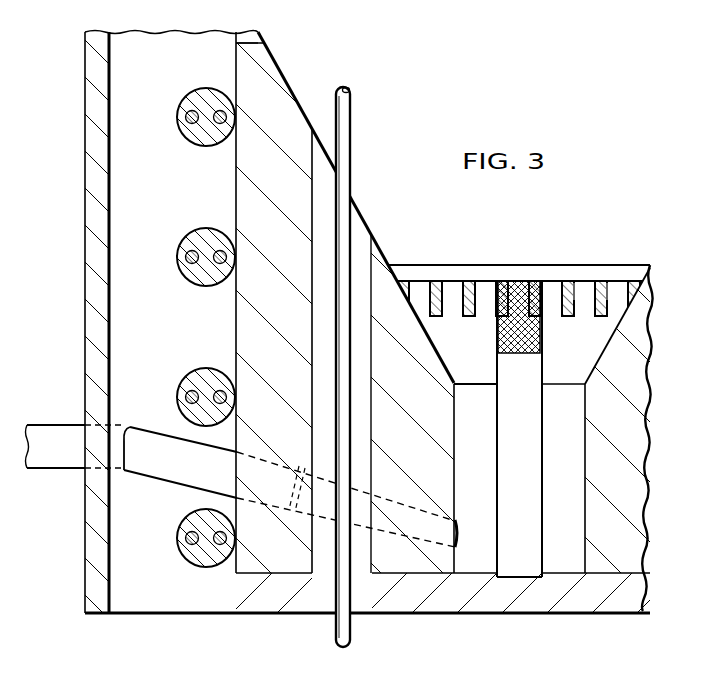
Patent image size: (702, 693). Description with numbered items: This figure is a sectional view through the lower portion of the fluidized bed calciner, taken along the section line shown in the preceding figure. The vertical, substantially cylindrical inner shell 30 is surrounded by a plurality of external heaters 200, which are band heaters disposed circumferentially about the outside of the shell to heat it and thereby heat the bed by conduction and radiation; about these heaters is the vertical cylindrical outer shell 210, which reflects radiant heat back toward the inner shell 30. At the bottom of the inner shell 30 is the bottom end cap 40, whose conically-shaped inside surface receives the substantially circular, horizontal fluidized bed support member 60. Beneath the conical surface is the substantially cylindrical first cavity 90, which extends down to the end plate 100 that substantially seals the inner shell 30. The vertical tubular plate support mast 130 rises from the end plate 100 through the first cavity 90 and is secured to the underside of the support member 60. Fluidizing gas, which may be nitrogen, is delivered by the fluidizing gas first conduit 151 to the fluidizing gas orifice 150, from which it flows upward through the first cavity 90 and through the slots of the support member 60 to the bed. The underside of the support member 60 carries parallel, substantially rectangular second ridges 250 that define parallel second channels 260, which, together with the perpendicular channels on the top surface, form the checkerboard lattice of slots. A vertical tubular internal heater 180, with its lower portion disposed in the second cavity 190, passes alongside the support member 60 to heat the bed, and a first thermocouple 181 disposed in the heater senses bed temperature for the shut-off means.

The inner shell 30 is at (259, 38).
The bottom end cap 40 is at (245, 326).
The fluidized bed support member 60 is at (573, 250).
The first cavity 90 is at (566, 468).
The end plate 100 is at (267, 600).
The tubular plate support mast 130 is at (508, 421).
The fluidizing gas orifice 150 is at (457, 522).
The fluidizing gas first conduit 151 is at (143, 465).
The internal heater 180 is at (357, 106).
The first thermocouple 181 is at (349, 87).
The second cavity 190 is at (357, 238).
The external heater 200 is at (181, 135).
The outer shell 210 is at (85, 262).
The second ridges 250 is at (593, 320).
The second channels 260 is at (617, 283).